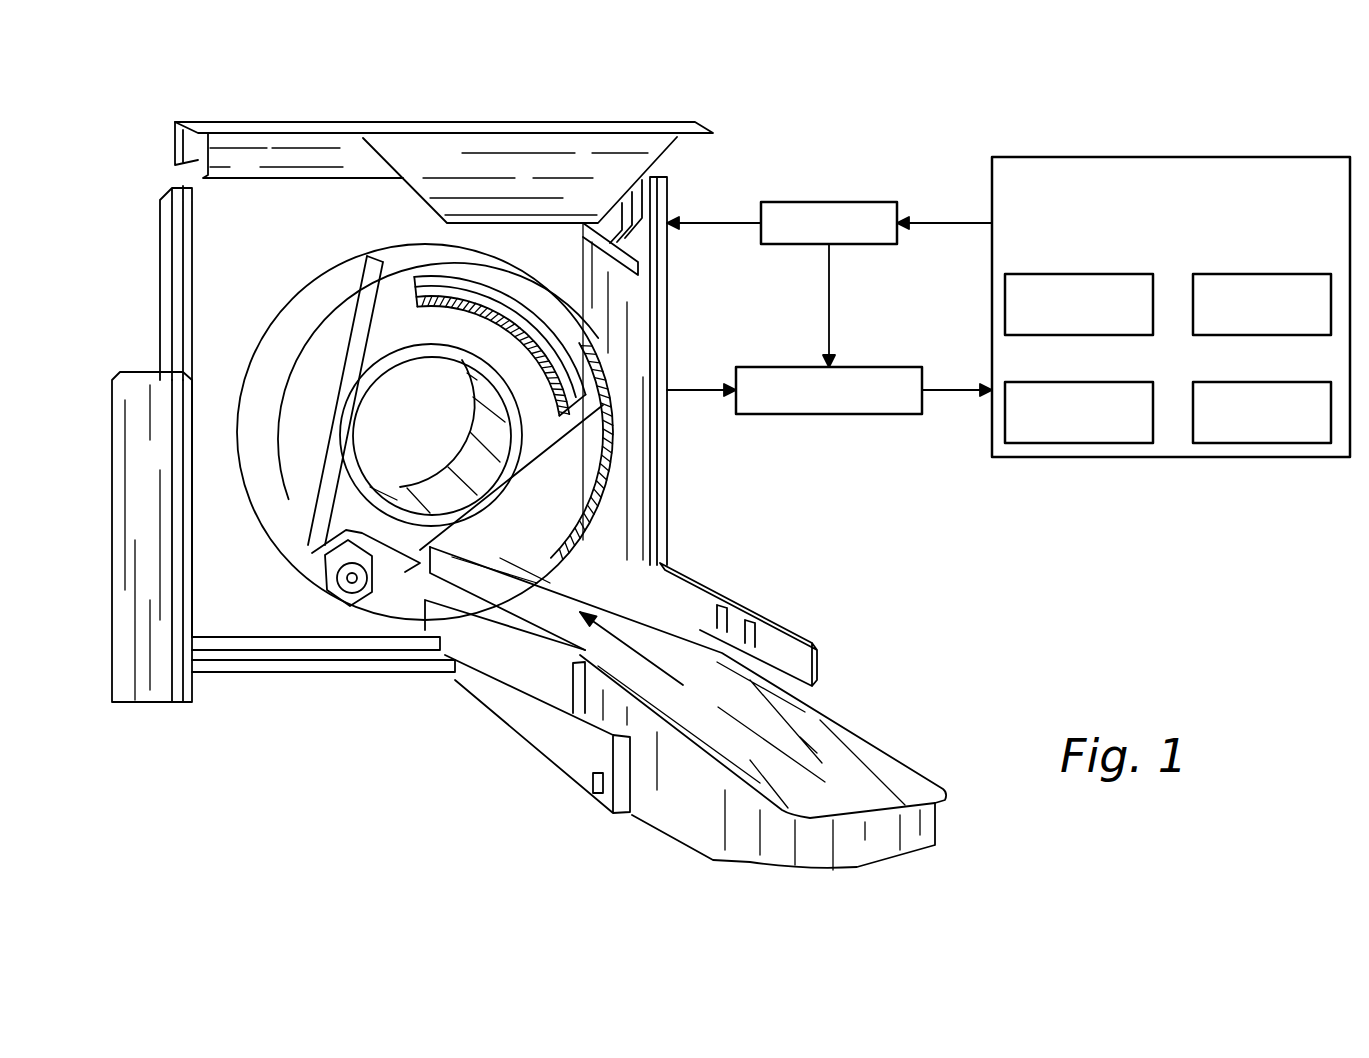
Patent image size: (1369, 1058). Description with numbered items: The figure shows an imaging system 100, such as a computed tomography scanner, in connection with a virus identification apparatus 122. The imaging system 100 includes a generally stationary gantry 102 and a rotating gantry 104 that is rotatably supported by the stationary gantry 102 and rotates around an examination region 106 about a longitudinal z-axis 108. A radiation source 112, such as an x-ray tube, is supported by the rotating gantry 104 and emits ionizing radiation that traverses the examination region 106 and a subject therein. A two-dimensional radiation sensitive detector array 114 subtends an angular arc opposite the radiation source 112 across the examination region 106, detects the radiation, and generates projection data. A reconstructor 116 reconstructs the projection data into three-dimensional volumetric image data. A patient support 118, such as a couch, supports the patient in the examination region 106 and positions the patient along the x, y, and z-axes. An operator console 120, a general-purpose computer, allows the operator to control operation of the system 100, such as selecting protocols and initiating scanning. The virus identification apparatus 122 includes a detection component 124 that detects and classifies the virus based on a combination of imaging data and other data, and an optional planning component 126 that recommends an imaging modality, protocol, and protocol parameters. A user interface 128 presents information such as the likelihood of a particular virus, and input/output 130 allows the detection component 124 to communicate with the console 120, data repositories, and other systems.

The imaging system 100 is at (143, 103).
The stationary gantry 102 is at (185, 273).
The rotating gantry 104 is at (400, 328).
The examination region 106 is at (432, 434).
The z-axis 108 is at (644, 623).
The radiation source 112 is at (346, 588).
The detector array 114 is at (560, 355).
The reconstructor 116 is at (826, 414).
The patient support 118 is at (853, 758).
The console 120 is at (806, 202).
The virus identification apparatus 122 is at (1170, 157).
The detection component 124 is at (1067, 382).
The planning component 126 is at (1067, 274).
The user interface 128 is at (1255, 274).
The input/output 130 is at (1255, 382).